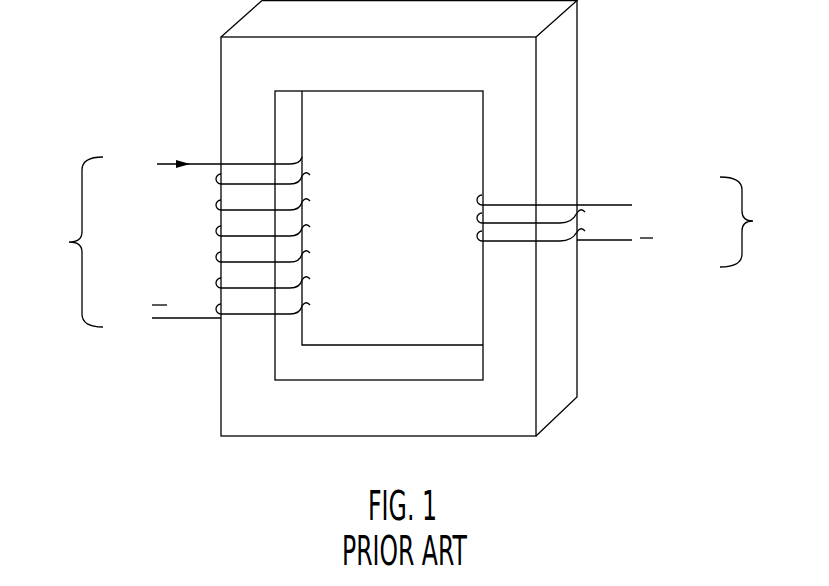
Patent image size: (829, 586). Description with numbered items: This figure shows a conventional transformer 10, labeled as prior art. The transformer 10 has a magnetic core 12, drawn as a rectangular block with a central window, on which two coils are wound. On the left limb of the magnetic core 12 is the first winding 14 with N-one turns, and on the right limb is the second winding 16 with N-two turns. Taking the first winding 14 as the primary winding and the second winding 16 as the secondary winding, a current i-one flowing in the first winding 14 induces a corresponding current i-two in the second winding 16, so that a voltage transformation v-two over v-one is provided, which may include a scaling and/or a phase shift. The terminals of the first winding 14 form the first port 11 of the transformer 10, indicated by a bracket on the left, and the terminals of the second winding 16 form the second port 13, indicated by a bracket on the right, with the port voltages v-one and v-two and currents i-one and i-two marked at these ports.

The transformer 10 is at (407, 254).
The first port 11 is at (68, 242).
The magnetic core 12 is at (249, 401).
The second port 13 is at (750, 222).
The first winding 14 is at (162, 338).
The second winding 16 is at (595, 264).